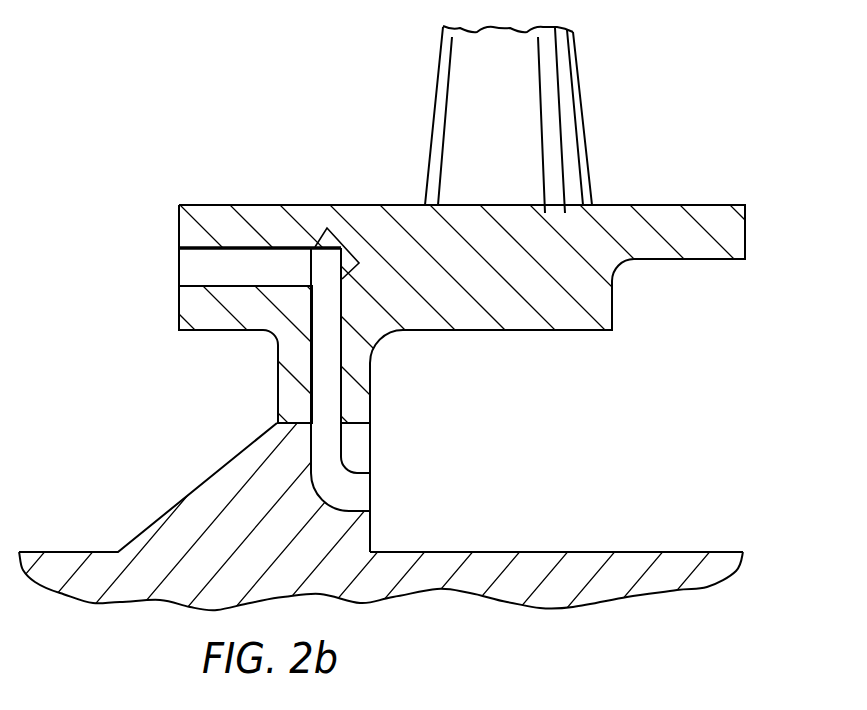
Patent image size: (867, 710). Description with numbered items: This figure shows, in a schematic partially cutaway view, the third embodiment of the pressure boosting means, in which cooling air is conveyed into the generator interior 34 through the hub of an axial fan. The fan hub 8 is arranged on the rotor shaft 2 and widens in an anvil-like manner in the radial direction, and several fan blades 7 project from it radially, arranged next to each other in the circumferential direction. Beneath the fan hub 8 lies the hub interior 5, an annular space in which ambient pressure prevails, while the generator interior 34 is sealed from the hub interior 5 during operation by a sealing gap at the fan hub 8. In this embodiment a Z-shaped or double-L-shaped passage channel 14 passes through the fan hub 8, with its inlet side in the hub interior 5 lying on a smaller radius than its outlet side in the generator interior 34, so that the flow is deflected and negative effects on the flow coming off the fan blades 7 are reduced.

The rotor shaft 2 is at (204, 505).
The hub interior 5 is at (555, 455).
The fan blades 7 is at (567, 104).
The fan hub 8 is at (598, 310).
The passage channel 14 is at (320, 382).
The generator interior 34 is at (224, 139).